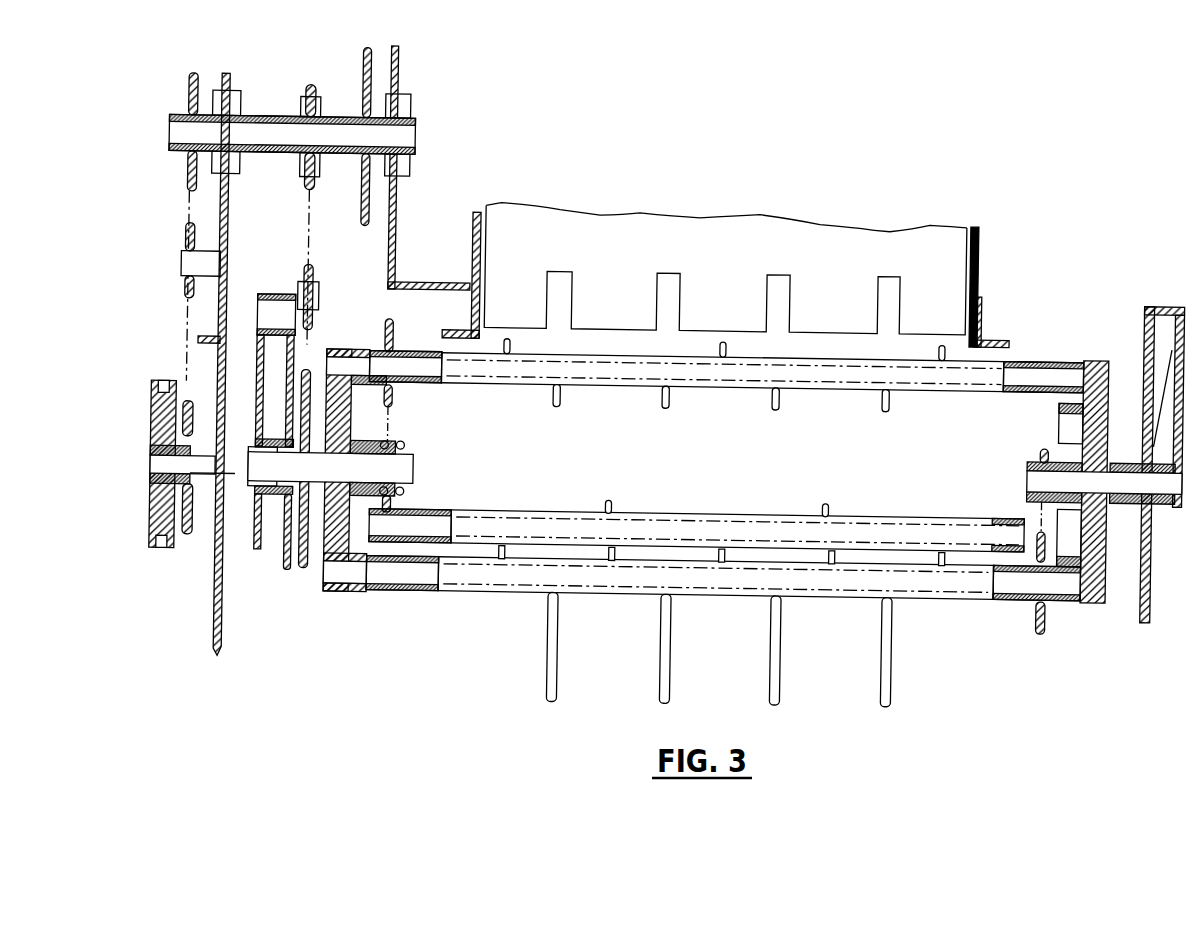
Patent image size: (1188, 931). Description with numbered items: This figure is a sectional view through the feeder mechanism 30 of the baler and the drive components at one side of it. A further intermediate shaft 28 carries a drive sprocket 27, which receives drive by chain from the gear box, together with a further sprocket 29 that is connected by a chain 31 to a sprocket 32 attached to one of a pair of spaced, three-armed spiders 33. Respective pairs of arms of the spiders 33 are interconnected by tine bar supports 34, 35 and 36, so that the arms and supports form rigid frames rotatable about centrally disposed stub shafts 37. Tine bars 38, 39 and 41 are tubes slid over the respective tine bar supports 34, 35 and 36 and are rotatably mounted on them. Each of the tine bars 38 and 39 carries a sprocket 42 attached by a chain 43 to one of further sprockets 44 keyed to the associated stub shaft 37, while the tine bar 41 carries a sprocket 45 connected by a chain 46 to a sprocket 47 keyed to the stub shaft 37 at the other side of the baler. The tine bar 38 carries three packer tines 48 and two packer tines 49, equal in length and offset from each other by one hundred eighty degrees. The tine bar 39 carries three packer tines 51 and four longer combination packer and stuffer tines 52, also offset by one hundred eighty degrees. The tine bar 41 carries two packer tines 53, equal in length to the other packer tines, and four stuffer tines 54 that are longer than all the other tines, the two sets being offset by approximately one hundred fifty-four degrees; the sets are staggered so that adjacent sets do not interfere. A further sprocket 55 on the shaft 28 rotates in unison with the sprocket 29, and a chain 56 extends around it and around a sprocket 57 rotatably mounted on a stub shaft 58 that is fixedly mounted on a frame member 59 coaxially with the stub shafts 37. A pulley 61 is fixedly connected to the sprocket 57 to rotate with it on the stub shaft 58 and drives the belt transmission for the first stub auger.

The drive sprocket 27 is at (372, 76).
The intermediate shaft 28 is at (266, 117).
The sprocket 29 is at (306, 172).
The feeder mechanism 30 is at (378, 613).
The chain 31 is at (312, 228).
The sprocket 32 is at (312, 363).
The three-armed spiders 33 is at (350, 398).
The tine bar support 34 is at (455, 512).
The tine bar support 35 is at (440, 392).
The tine bar support 36 is at (397, 590).
The stub shafts 37 is at (412, 468).
The tine bar 38 is at (540, 512).
The tine bar 39 is at (507, 386).
The tine bar 41 is at (473, 596).
The sprocket 42 is at (390, 395).
The chain 43 is at (388, 428).
The sprockets 44 is at (404, 447).
The sprocket 45 is at (1037, 622).
The chain 46 is at (1036, 532).
The sprocket 47 is at (1040, 456).
The packer tines 48 is at (506, 560).
The packer tines 49 is at (828, 502).
The packer tines 51 is at (510, 345).
The combination packer and stuffer tines 52 is at (566, 398).
The packer tines 53 is at (613, 560).
The stuffer tines 54 is at (660, 670).
The sprocket 55 is at (187, 82).
The chain 56 is at (185, 340).
The sprocket 57 is at (200, 530).
The stub shaft 58 is at (203, 476).
The frame member 59 is at (220, 612).
The pulley 61 is at (150, 527).